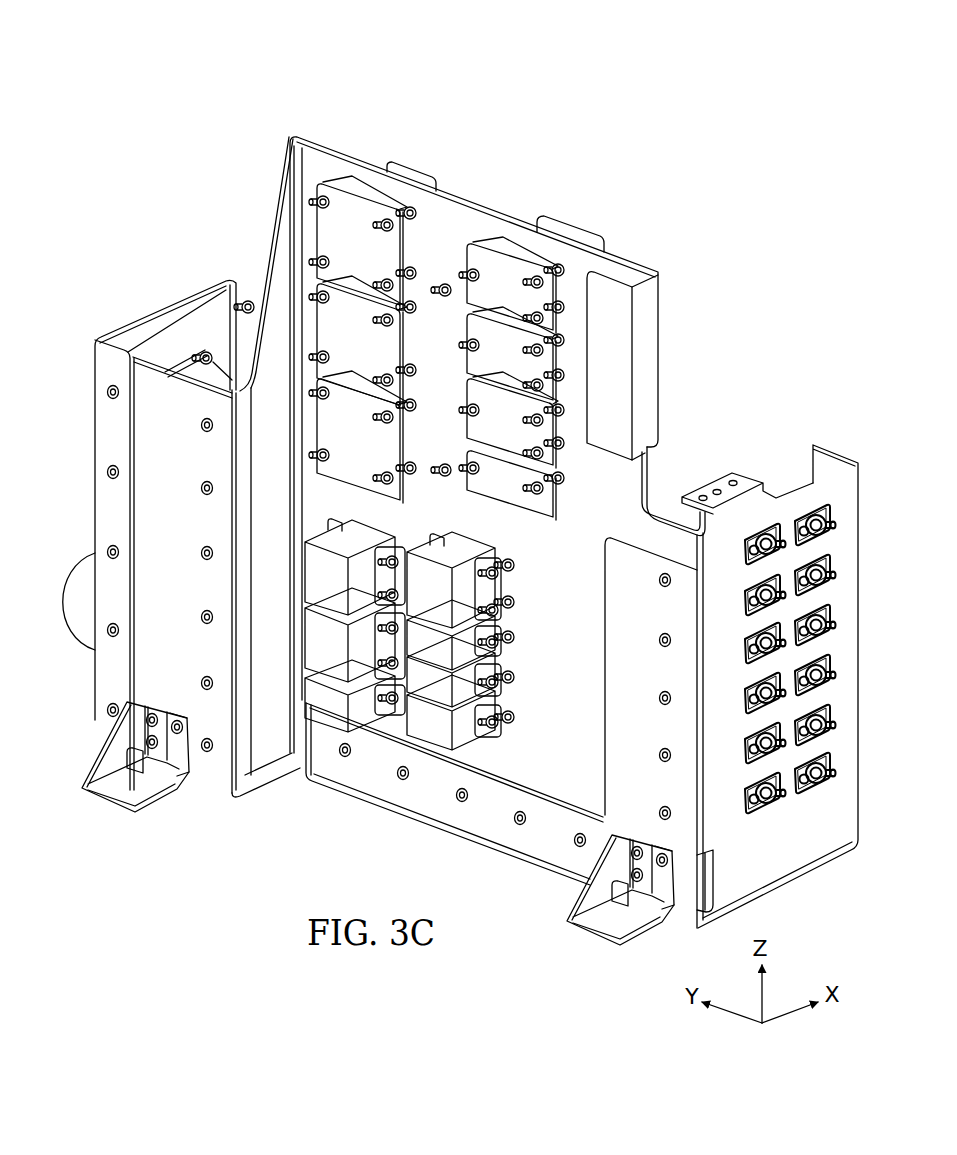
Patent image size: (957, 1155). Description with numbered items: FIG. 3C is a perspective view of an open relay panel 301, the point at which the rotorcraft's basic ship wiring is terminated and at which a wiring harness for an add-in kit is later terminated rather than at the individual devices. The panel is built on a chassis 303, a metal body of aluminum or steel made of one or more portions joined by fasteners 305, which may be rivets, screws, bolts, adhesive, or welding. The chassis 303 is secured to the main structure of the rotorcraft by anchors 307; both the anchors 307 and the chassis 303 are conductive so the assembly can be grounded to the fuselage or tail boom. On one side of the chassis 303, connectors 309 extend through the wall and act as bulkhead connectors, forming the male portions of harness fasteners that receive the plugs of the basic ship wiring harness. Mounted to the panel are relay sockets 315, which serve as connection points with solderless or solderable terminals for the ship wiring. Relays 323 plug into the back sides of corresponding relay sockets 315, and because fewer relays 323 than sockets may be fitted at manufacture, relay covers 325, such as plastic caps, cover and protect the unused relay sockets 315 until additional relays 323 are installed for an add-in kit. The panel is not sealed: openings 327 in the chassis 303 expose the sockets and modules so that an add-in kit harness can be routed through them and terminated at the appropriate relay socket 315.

The open relay panel 301 is at (448, 509).
The chassis 303 is at (169, 467).
The fasteners 305 is at (397, 772).
The anchors 307 is at (742, 478).
The connectors 309 is at (82, 542).
The relay sockets 315 is at (567, 230).
The relays 323 is at (503, 542).
The relay covers 325 is at (303, 208).
The openings 327 is at (728, 337).